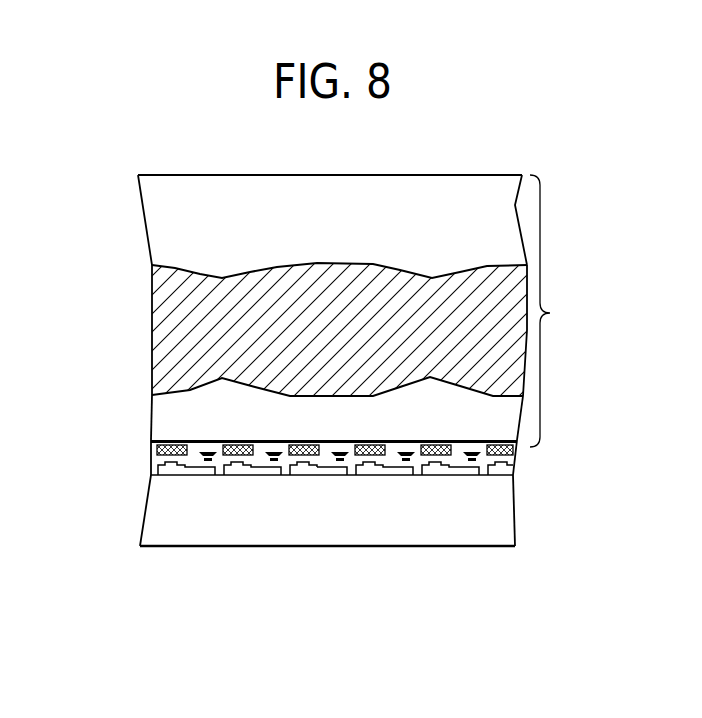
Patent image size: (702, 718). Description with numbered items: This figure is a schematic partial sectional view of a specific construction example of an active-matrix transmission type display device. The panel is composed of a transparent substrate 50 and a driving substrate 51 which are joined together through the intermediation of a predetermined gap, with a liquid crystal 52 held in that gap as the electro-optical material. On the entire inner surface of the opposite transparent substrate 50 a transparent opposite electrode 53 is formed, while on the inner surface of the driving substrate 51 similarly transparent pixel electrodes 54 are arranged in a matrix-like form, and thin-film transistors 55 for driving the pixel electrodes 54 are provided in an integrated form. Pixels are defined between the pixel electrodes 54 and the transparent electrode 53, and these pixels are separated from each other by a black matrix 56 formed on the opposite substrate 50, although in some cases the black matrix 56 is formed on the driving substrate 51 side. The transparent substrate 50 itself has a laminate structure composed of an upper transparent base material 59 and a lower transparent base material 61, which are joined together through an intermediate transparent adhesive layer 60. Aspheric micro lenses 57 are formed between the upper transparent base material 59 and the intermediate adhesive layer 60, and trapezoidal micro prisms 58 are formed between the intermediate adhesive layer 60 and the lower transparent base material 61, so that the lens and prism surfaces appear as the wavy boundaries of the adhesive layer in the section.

The transparent substrate 50 is at (557, 311).
The driving substrate 51 is at (532, 460).
The liquid crystal 52 is at (366, 525).
The transparent opposite electrode 53 is at (205, 446).
The pixel electrodes 54 is at (338, 468).
The thin-film transistors 55 is at (305, 475).
The black matrix 56 is at (220, 475).
The aspheric micro lenses 57 is at (268, 268).
The trapezoidal micro prisms 58 is at (240, 386).
The upper transparent base material 59 is at (173, 195).
The intermediate transparent adhesive layer 60 is at (150, 302).
The lower transparent base material 61 is at (185, 417).